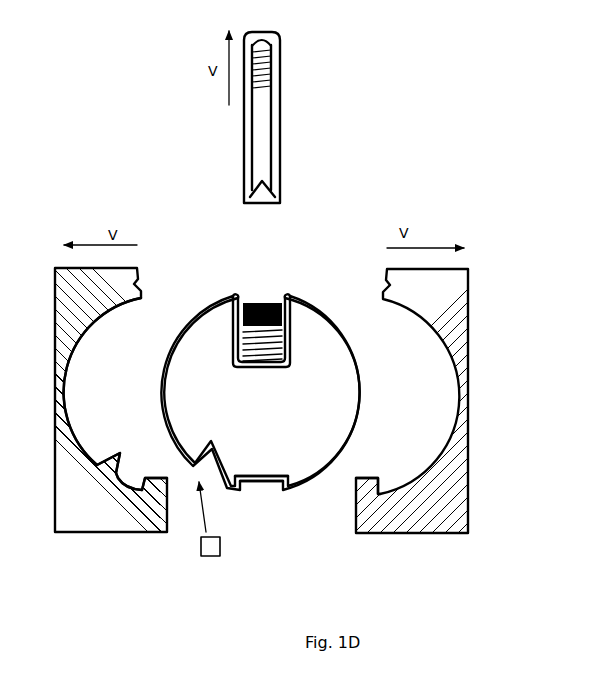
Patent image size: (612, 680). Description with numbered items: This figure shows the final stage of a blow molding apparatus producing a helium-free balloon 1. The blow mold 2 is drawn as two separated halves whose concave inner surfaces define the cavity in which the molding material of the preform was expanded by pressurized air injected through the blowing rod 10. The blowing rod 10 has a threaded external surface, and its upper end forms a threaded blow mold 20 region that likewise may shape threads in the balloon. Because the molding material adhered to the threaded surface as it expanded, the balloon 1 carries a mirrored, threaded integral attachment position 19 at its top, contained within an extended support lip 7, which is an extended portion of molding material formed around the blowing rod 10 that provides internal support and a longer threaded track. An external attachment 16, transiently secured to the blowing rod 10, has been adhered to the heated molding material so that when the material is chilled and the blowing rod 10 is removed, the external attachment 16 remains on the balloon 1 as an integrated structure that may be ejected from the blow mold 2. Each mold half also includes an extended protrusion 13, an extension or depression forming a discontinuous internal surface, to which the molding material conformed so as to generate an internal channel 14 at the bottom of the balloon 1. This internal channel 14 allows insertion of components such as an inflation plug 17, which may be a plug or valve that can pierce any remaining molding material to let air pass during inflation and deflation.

The helium-free balloon 1 is at (221, 297).
The blow mold 2 is at (55, 524).
The extended support lip 7 is at (0, 332).
The blowing rod 10 is at (282, 142).
The extended protrusion 13 is at (108, 468).
The internal channel 14 is at (258, 482).
The external attachment 16 is at (262, 304).
The inflation plug 17 is at (219, 558).
The integral attachment position 19 is at (290, 341).
The threaded blow mold 20 is at (279, 50).